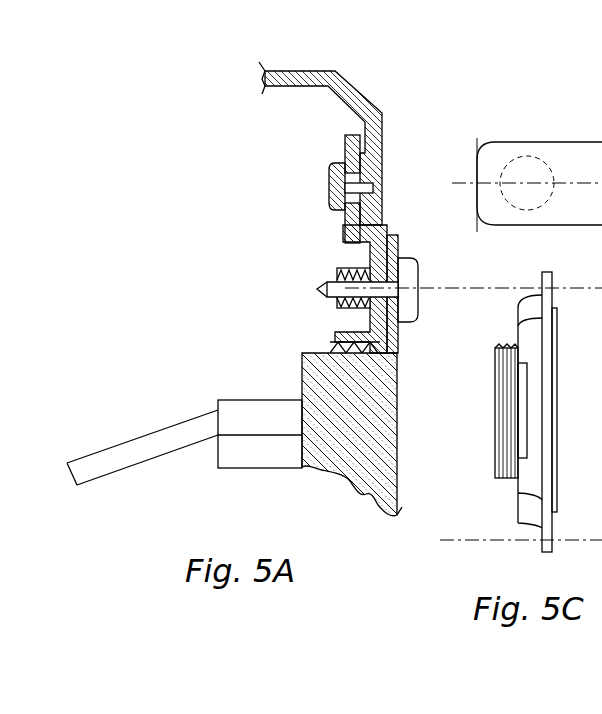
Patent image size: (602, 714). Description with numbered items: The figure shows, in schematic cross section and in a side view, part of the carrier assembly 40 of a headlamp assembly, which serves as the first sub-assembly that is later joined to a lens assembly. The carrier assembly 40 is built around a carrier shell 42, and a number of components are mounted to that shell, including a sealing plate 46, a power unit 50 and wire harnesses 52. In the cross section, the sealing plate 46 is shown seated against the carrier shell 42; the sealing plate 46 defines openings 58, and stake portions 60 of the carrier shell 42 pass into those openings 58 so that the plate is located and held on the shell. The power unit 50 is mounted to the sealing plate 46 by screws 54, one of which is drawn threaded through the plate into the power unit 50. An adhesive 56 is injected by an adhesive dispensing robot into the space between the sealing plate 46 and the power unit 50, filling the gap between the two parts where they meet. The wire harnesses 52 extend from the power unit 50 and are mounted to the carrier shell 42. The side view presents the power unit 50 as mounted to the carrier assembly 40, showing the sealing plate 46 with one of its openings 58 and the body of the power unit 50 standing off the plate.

In FIG. 5A, the carrier assembly 40 is at (125, 117).
In FIG. 5A, the carrier shell 42 is at (350, 122).
In FIG. 5A, the sealing plate 46 is at (327, 240).
In FIG. 5A, the power unit 50 is at (360, 493).
In FIG. 5C, the power unit 50 is at (510, 493).
In FIG. 5A, the wire harnesses 52 is at (74, 456).
In FIG. 5A, the screws 54 is at (313, 298).
In FIG. 5A, the adhesive 56 is at (328, 346).
In FIG. 5C, the openings 58 is at (535, 160).
In FIG. 5A, the stake portions 60 is at (308, 168).